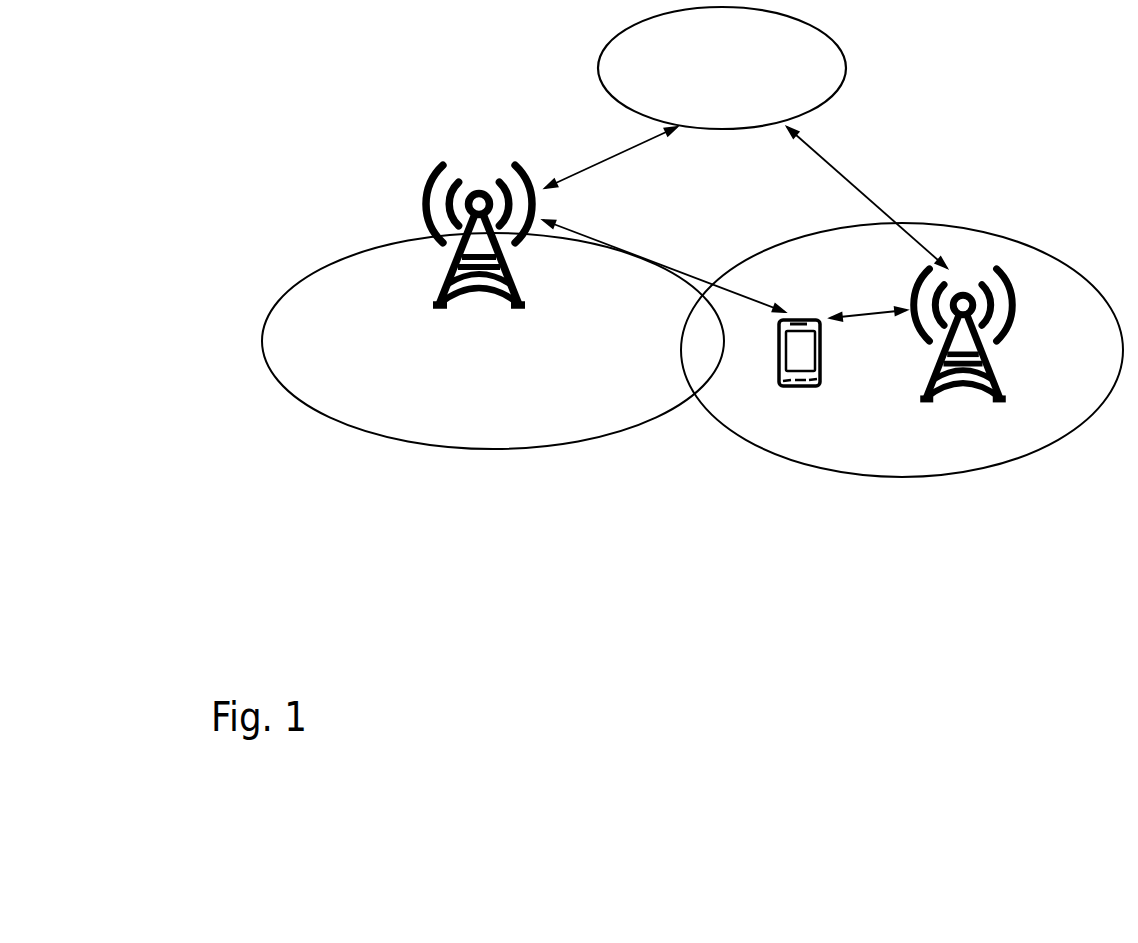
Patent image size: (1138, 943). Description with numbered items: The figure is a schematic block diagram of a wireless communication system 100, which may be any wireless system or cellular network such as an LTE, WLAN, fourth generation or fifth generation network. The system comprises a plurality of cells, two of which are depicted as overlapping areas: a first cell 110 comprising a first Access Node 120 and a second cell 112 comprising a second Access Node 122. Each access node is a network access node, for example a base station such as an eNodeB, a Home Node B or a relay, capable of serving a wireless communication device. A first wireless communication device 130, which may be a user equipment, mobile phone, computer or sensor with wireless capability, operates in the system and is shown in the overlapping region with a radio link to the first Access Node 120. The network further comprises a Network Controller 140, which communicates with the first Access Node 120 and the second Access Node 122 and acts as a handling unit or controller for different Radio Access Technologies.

The wireless communication system 100 is at (669, 315).
The first cell 110 is at (985, 448).
The second cell 112 is at (328, 284).
The first Access Node 120 is at (975, 377).
The second Access Node 122 is at (452, 291).
The first wireless communication device 130 is at (778, 333).
The Network Controller 140 is at (722, 68).